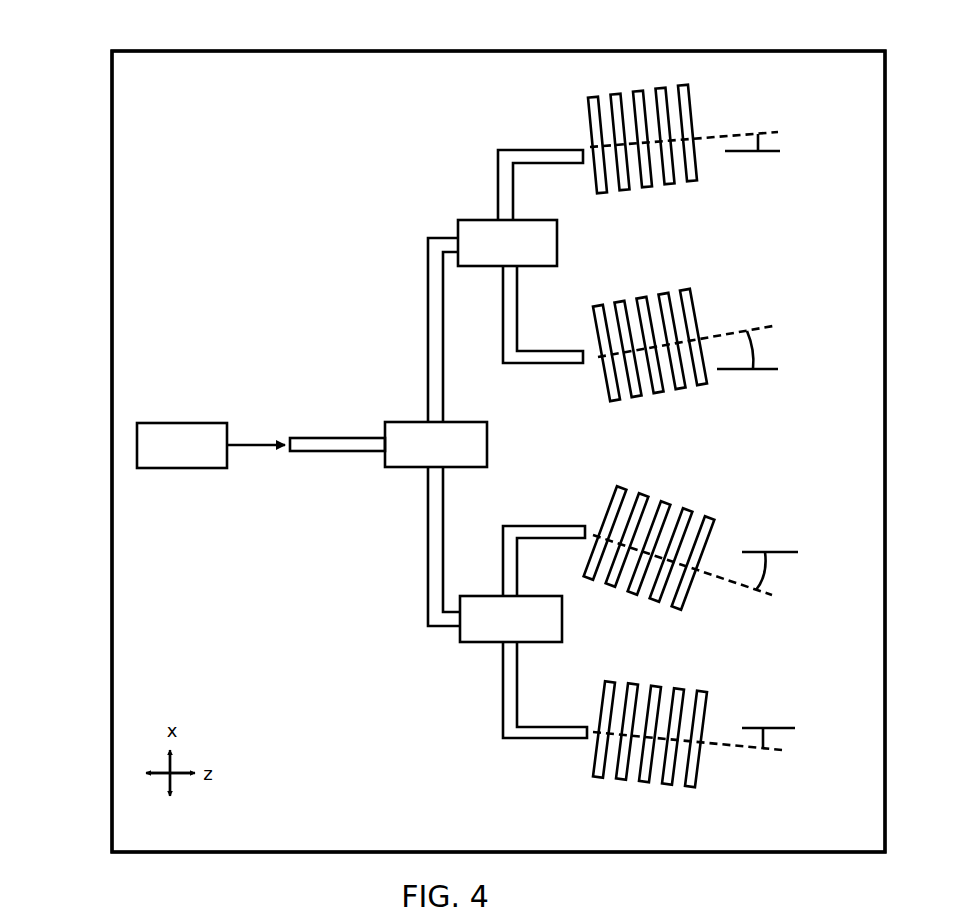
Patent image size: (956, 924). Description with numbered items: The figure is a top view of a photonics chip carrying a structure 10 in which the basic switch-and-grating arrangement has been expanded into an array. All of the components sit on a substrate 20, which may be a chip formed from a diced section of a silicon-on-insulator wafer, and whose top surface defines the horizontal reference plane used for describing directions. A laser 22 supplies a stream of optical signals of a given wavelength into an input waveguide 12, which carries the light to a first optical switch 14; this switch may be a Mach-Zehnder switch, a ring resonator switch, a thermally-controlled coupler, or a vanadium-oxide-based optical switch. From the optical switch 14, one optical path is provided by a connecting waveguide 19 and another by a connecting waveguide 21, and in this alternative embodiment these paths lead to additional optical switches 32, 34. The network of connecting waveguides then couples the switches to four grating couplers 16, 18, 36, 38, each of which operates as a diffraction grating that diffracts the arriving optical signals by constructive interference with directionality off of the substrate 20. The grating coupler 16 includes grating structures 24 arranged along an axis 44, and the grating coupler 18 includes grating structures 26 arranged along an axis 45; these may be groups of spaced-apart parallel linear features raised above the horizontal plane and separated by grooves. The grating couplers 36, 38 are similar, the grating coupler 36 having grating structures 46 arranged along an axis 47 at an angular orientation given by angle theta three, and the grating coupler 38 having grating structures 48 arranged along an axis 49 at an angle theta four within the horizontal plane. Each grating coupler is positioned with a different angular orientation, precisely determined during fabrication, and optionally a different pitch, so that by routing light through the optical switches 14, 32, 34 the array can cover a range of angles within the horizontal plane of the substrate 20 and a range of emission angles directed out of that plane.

The structure 10 is at (100, 52).
The substrate 20 is at (130, 552).
The laser 22 is at (175, 422).
The input waveguide 12 is at (352, 437).
The optical switch 14 is at (415, 422).
The connecting waveguide 19 is at (428, 295).
The connecting waveguide 21 is at (428, 537).
The optical switch 32 is at (473, 220).
The optical switch 34 is at (480, 642).
The grating coupler 16 is at (697, 328).
The grating coupler 18 is at (700, 548).
The grating coupler 36 is at (650, 136).
The grating coupler 38 is at (664, 743).
The grating structures 24 is at (675, 385).
The grating structures 26 is at (625, 590).
The grating structures 46 is at (665, 172).
The grating structures 48 is at (688, 752).
The axis 44 is at (722, 330).
The axis 45 is at (718, 572).
The axis 47 is at (715, 132).
The axis 49 is at (712, 740).